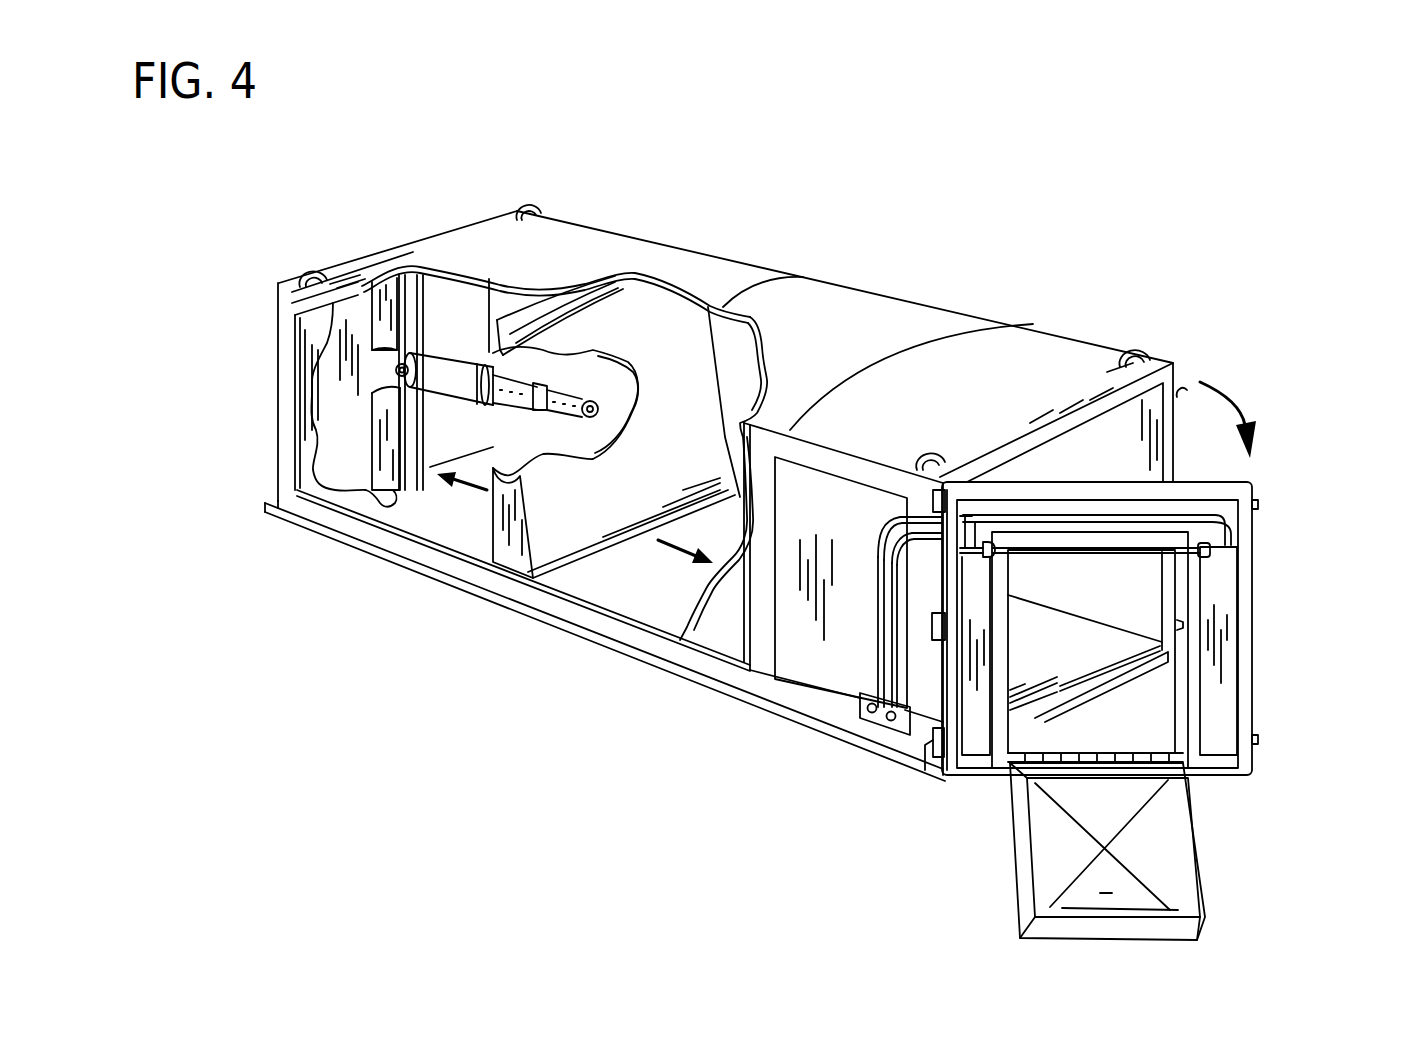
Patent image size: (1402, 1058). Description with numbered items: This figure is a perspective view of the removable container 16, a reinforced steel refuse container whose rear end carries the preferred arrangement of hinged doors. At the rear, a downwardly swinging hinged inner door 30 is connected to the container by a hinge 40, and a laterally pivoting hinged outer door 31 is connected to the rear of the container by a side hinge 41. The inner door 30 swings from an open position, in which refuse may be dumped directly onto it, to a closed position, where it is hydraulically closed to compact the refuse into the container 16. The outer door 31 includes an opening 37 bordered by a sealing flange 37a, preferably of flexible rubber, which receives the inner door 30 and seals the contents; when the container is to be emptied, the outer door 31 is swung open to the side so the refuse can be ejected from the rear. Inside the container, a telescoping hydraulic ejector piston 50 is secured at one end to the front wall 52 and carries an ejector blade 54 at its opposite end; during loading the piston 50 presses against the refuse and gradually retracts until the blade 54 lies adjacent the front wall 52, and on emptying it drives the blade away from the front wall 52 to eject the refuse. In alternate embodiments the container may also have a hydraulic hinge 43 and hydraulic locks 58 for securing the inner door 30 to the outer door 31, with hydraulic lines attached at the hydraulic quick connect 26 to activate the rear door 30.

The removable container 16 is at (883, 327).
The hydraulic quick connect 26 is at (872, 709).
The inner door 30 is at (1017, 883).
The outer door 31 is at (1252, 573).
The opening 37 is at (1188, 692).
The sealing flange 37a is at (1190, 658).
The hinge 40 is at (1140, 763).
The side hinge 41 is at (932, 740).
The hydraulic hinge 43 is at (935, 500).
The telescoping hydraulic ejector piston 50 is at (447, 378).
The front wall 52 is at (381, 321).
The ejector blade 54 is at (518, 560).
The hydraulic lock 58 is at (1228, 543).